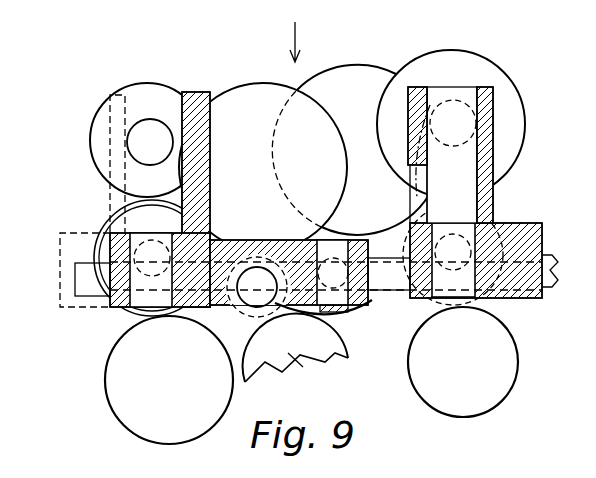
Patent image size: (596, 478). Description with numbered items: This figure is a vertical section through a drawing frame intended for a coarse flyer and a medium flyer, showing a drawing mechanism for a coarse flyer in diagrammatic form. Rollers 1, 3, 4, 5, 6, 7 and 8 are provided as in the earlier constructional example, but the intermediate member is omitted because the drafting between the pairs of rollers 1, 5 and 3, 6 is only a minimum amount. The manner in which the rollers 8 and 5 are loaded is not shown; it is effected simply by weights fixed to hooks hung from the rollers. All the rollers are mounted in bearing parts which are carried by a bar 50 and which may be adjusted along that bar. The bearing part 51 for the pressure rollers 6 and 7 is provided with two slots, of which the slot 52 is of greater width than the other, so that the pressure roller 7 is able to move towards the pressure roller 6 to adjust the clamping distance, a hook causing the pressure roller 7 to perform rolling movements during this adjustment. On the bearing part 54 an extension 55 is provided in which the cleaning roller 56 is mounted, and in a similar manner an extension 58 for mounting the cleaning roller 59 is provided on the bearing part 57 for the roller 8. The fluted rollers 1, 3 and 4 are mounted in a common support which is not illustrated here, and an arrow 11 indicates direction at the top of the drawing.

The fluted roller 1 is at (517, 337).
The fluted roller 3 is at (295, 349).
The fluted roller 4 is at (125, 407).
The roller 5 is at (495, 223).
The pressure roller 6 is at (340, 312).
The pressure roller 7 is at (248, 313).
The roller 8 is at (135, 313).
The direction arrow 11 is at (312, 42).
The bar 50 is at (552, 257).
The bearing part 51 is at (372, 295).
The slot 52 is at (268, 247).
The bearing part 54 is at (527, 225).
The extension 55 is at (483, 153).
The cleaning roller 56 is at (495, 82).
The bearing part 57 is at (115, 243).
The extension 58 is at (205, 92).
The cleaning roller 59 is at (105, 127).